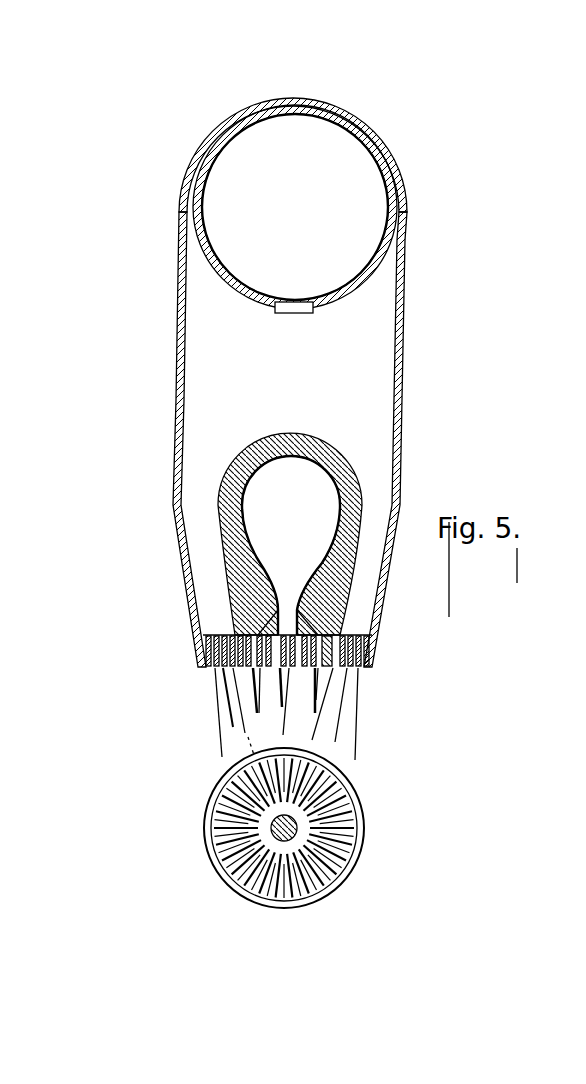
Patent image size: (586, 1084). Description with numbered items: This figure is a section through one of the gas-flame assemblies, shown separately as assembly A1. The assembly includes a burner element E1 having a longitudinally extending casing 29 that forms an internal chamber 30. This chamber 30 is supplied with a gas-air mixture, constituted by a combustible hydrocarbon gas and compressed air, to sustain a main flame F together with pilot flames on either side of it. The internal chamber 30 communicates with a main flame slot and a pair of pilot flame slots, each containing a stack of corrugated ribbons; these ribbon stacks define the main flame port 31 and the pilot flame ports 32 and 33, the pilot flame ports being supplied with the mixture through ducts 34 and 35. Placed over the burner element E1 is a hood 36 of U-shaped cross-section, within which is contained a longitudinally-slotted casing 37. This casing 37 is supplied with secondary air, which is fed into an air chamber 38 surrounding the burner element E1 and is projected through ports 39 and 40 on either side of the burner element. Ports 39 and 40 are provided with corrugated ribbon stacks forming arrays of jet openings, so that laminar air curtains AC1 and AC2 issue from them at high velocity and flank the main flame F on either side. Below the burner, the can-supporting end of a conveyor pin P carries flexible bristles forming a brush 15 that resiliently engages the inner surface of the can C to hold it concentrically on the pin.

The hood 36 is at (400, 362).
The longitudinally-slotted casing 37 is at (373, 268).
The air chamber 38 is at (212, 351).
The gas-flame assembly A1 is at (176, 408).
The casing 29 is at (244, 452).
The internal chamber 30 is at (318, 478).
The burner element E1 is at (332, 438).
The duct 34 is at (234, 604).
The duct 35 is at (300, 617).
The port 39 is at (205, 648).
The port 40 is at (370, 650).
The pilot flame port 32 is at (278, 633).
The main flame port 31 is at (294, 632).
The pilot flame port 33 is at (302, 636).
The pin P is at (255, 680).
The laminar air curtain AC1 is at (226, 706).
The laminar air curtain AC2 is at (348, 720).
The main flame F is at (283, 728).
The cup C is at (366, 835).
The brush 15 is at (320, 867).